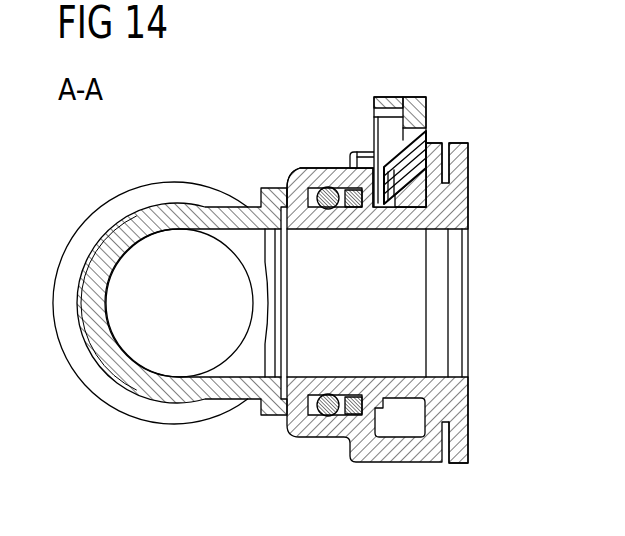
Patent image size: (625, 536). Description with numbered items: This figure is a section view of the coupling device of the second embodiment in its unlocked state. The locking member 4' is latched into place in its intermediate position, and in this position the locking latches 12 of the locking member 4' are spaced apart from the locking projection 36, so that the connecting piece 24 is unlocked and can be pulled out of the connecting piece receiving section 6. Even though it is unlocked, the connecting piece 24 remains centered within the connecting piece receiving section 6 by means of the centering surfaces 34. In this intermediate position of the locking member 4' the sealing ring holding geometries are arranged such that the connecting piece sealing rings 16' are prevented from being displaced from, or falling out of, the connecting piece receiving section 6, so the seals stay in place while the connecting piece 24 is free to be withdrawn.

The locking member 4' is at (428, 149).
The connecting piece receiving section 6 is at (442, 468).
The locking latches 12 is at (392, 147).
The connecting piece sealing rings 16' is at (335, 371).
The connecting piece 24 is at (447, 202).
The centering surfaces 34 is at (284, 190).
The locking projection 36 is at (372, 213).